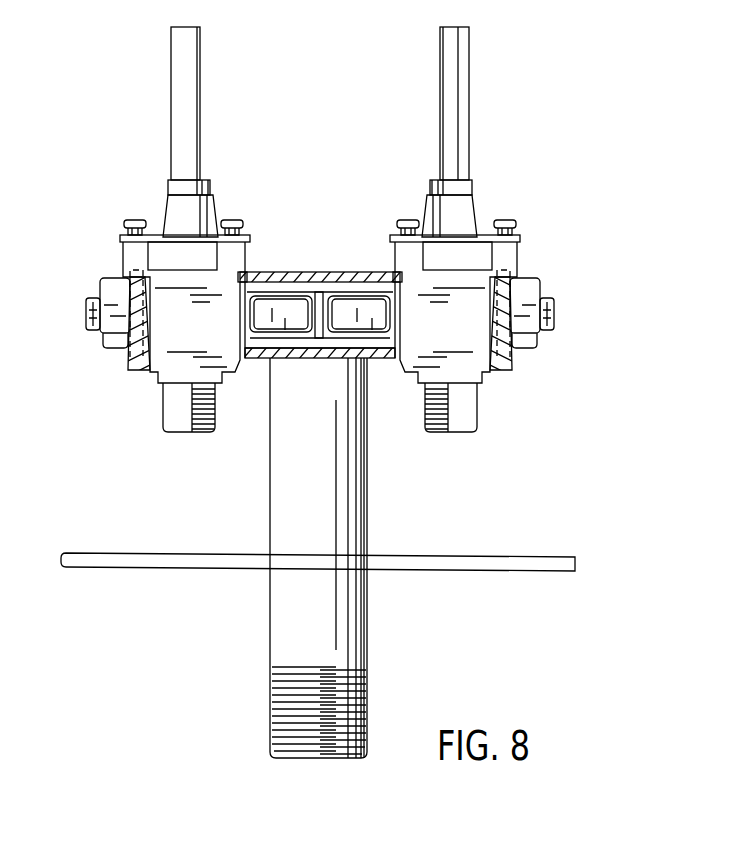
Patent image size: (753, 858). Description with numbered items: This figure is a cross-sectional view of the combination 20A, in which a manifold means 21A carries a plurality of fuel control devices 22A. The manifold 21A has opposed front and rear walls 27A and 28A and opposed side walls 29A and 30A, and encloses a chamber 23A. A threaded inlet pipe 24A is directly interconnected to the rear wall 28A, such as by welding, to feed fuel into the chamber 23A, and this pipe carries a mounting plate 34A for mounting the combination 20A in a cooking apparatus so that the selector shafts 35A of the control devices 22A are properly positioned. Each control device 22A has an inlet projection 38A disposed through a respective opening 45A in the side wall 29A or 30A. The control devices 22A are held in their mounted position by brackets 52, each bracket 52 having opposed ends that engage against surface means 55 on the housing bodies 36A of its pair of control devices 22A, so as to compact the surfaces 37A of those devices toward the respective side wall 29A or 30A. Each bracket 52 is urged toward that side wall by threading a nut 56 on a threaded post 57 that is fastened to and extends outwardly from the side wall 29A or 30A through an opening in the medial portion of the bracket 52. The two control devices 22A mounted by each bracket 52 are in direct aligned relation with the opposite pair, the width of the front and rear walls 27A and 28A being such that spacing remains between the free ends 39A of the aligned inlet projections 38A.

The combination 20A is at (538, 151).
The manifold means 21A is at (340, 262).
The fuel control devices 22A is at (122, 262).
The chamber 23A is at (308, 288).
The threaded inlet pipe 24A is at (270, 602).
The front wall 27A is at (312, 278).
The rear wall 28A is at (293, 362).
The side wall 29A is at (404, 268).
The side wall 30A is at (238, 274).
The mounting plate 34A is at (545, 557).
The selector shafts 35A is at (177, 80).
The housing bodies 36A is at (170, 368).
The surfaces 37A is at (238, 275).
The inlet projections 38A is at (285, 322).
The free ends 39A is at (320, 340).
The openings 45A is at (240, 320).
The brackets 52 is at (130, 367).
The surface means 55 is at (125, 344).
The nut 56 is at (98, 282).
The threaded post 57 is at (86, 315).